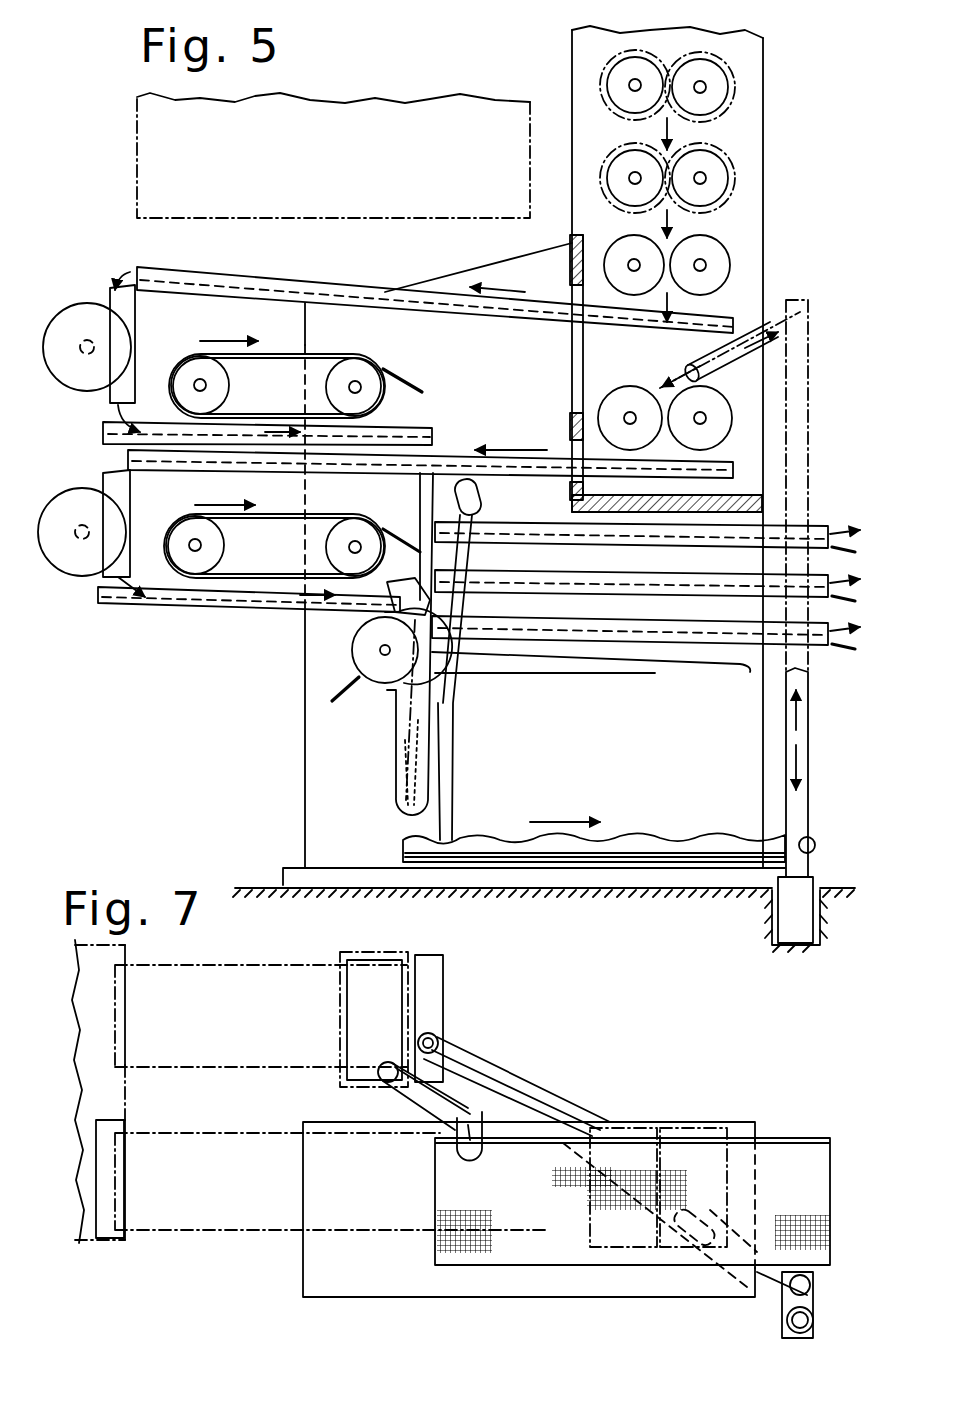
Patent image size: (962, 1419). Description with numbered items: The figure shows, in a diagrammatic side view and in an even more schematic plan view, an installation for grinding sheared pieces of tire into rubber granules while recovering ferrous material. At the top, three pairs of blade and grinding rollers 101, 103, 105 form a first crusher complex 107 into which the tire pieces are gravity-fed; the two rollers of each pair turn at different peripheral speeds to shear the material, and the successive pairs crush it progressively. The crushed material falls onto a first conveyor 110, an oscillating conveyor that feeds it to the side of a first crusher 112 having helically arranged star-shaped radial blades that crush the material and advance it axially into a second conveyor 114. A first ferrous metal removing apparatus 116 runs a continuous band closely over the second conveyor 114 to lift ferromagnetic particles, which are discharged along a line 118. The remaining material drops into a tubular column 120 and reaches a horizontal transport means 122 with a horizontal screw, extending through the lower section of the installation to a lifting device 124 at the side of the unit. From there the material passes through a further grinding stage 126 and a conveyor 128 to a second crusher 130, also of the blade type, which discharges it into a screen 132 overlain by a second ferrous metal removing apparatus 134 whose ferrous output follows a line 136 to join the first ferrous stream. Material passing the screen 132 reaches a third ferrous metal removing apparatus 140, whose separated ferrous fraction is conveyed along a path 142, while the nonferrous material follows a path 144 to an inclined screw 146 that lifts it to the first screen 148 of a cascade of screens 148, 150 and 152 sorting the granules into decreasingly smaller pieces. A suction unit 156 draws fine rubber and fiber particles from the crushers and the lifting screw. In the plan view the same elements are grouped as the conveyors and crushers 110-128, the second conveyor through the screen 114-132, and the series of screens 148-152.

In FIG. 5, the pair of blade and grinding rollers 101 is at (590, 97).
In FIG. 5, the pair of blade and grinding rollers 103 is at (595, 160).
In FIG. 5, the pair of blade and grinding rollers 105 is at (605, 232).
In FIG. 5, the first crusher complex 107 is at (768, 128).
In FIG. 7, the first crusher complex 107 is at (375, 1278).
In FIG. 5, the first conveyor 110 is at (262, 290).
In FIG. 5, the first crusher 112 is at (70, 307).
In FIG. 5, the second conveyor 114 is at (100, 418).
In FIG. 5, the first ferrous metal removing apparatus 116 is at (290, 348).
In FIG. 5, the discharge line 118 is at (408, 378).
In FIG. 5, the tubular column 120 is at (445, 448).
In FIG. 7, the tubular column 120 is at (445, 1047).
In FIG. 5, the horizontal transport means 122 is at (693, 821).
In FIG. 7, the horizontal transport means 122 is at (617, 1153).
In FIG. 5, the lifting device 124 is at (818, 315).
In FIG. 7, the lifting device 124 is at (805, 1318).
In FIG. 5, the further grinding stage 126 is at (622, 393).
In FIG. 7, the further grinding stage 126 is at (727, 1180).
In FIG. 5, the conveyor 128 is at (547, 460).
In FIG. 5, the second crusher 130 is at (72, 570).
In FIG. 7, the second crusher 130 is at (90, 1247).
In FIG. 5, the screen 132 is at (215, 617).
In FIG. 5, the second ferrous metal removing apparatus 134 is at (292, 513).
In FIG. 5, the ferrous conveying line 136 is at (405, 522).
In FIG. 5, the third ferrous metal removing apparatus 140 is at (350, 648).
In FIG. 7, the third ferrous metal removing apparatus 140 is at (403, 948).
In FIG. 5, the ferrous conveying path 142 is at (335, 690).
In FIG. 5, the path 144 is at (395, 718).
In FIG. 7, the path 144 is at (373, 1072).
In FIG. 5, the inclined screw 146 is at (482, 505).
In FIG. 7, the inclined screw 146 is at (443, 1127).
In FIG. 5, the first screen 148 is at (695, 535).
In FIG. 5, the second screen 150 is at (695, 583).
In FIG. 5, the third screen 152 is at (735, 640).
In FIG. 5, the suction unit 156 is at (135, 158).
In FIG. 7, the second conveyor through screen 114-132 is at (193, 968).
In FIG. 7, the first conveyor through conveyor 110-128 is at (230, 1232).
In FIG. 7, the series of screens 148-152 is at (785, 1150).